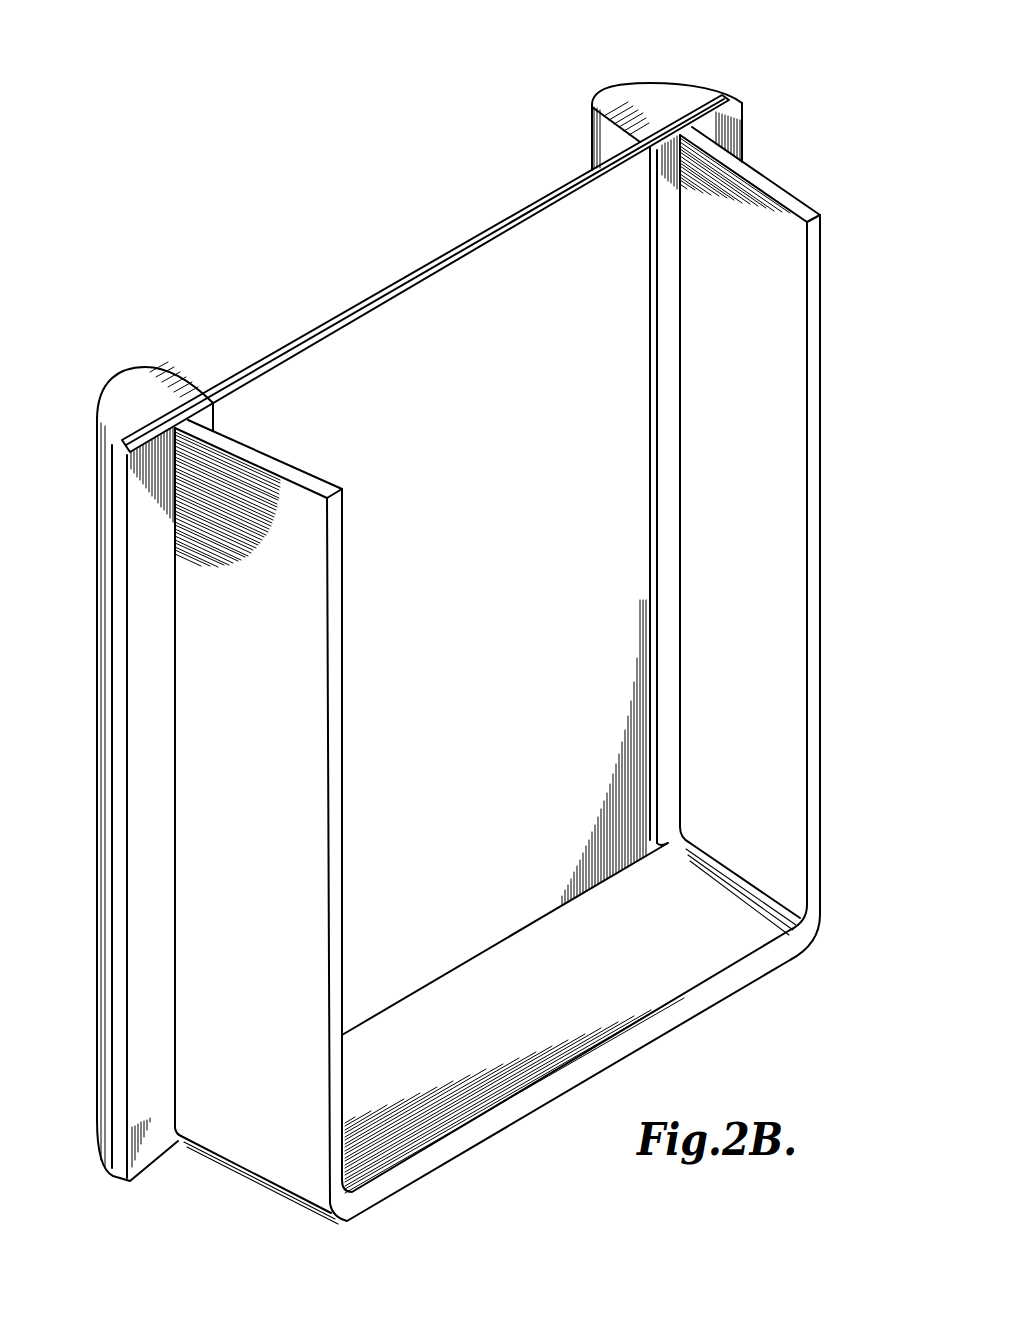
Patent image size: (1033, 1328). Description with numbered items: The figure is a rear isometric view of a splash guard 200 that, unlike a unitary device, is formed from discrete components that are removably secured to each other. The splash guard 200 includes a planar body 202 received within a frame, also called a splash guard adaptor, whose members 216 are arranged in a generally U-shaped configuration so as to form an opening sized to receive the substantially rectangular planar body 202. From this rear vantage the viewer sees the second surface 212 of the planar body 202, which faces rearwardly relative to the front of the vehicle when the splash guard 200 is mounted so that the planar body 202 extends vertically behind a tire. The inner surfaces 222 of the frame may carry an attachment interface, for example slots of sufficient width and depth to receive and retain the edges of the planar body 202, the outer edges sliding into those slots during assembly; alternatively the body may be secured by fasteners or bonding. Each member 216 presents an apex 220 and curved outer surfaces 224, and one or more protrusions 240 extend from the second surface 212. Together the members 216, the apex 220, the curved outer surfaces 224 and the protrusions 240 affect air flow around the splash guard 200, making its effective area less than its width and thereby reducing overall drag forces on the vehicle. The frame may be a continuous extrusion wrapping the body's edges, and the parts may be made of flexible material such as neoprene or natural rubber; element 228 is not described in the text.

The splash guard 200 is at (297, 203).
The planar body 202 is at (408, 276).
The second surface 212 is at (507, 622).
The members 216 is at (133, 398).
The apex 220 is at (112, 370).
The inner surfaces 222 is at (158, 375).
The curved outer surfaces 224 is at (93, 420).
The vertical post 228 is at (110, 587).
The protrusions 240 is at (262, 1148).